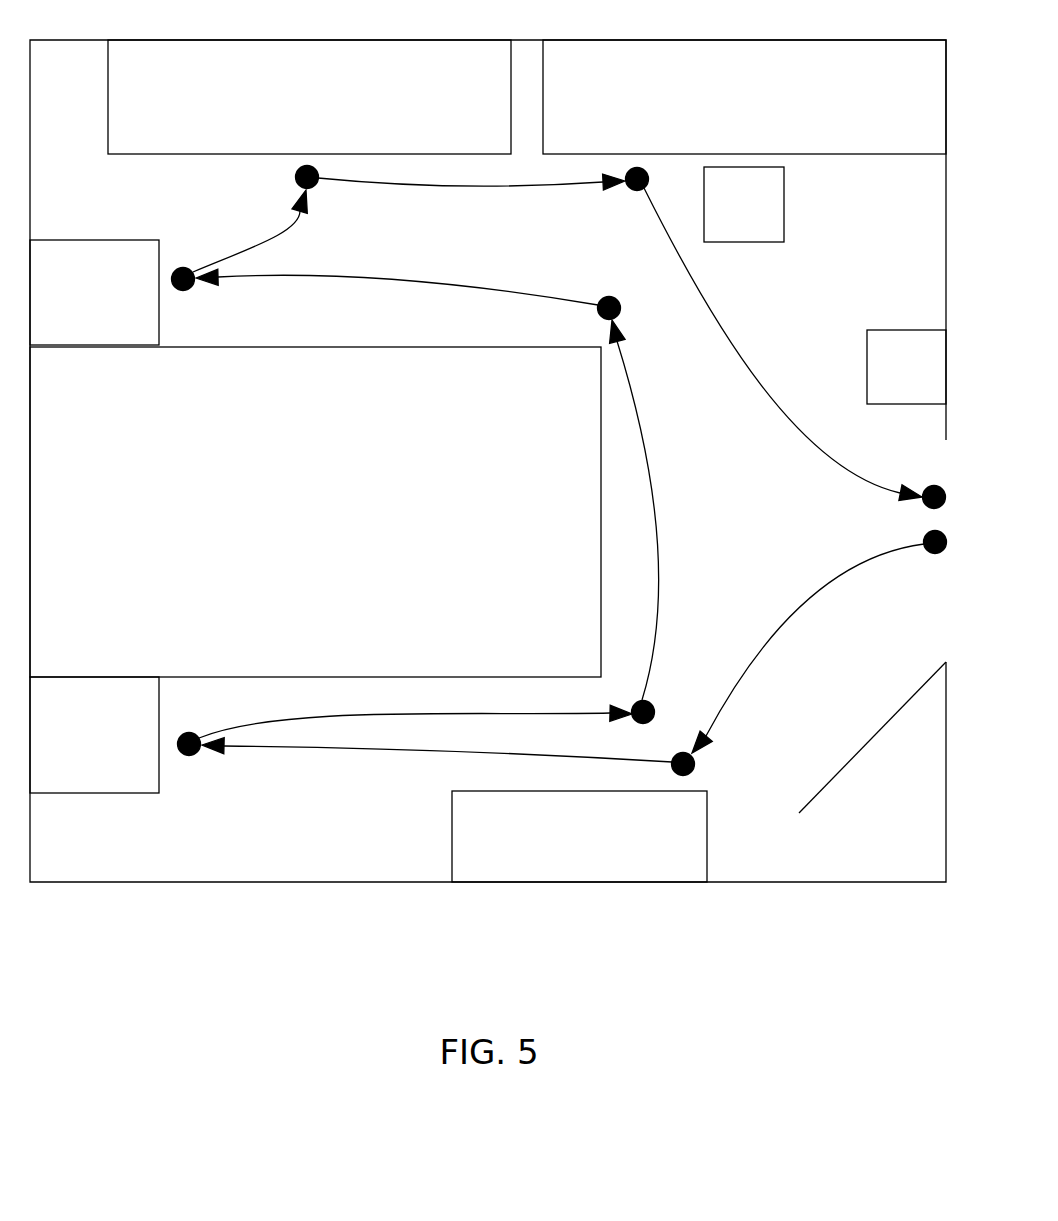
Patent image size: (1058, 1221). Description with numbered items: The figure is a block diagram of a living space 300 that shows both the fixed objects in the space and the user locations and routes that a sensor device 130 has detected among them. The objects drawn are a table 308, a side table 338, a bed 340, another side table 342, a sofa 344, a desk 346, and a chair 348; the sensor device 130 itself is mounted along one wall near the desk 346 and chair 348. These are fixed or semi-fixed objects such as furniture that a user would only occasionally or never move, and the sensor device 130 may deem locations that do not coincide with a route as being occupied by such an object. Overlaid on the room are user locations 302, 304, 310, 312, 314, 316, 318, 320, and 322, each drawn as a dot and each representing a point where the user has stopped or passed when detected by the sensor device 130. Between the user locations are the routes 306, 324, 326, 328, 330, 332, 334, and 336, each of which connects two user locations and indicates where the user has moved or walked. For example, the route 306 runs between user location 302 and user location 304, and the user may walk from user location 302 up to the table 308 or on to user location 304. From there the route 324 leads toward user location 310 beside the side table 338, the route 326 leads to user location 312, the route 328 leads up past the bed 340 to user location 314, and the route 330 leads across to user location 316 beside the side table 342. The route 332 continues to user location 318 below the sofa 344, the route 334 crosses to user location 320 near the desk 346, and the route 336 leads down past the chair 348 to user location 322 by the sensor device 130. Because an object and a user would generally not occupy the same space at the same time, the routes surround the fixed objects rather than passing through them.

The living space 300 is at (469, 987).
The sofa 344 is at (108, 58).
The desk 346 is at (853, 155).
The chair 348 is at (785, 206).
The sensor device 130 is at (868, 353).
The side table 342 is at (137, 239).
The bed 340 is at (485, 346).
The side table 338 is at (108, 793).
The table 308 is at (452, 840).
The user location 302 is at (925, 552).
The user location 304 is at (694, 772).
The route 306 is at (812, 582).
The user location 310 is at (196, 755).
The user location 312 is at (655, 706).
The user location 314 is at (618, 313).
The user location 316 is at (194, 288).
The user location 318 is at (296, 190).
The user location 320 is at (626, 192).
The user location 322 is at (926, 488).
The route 324 is at (368, 750).
The route 326 is at (495, 716).
The route 328 is at (656, 520).
The route 330 is at (397, 278).
The route 332 is at (212, 255).
The route 334 is at (470, 186).
The route 336 is at (770, 412).